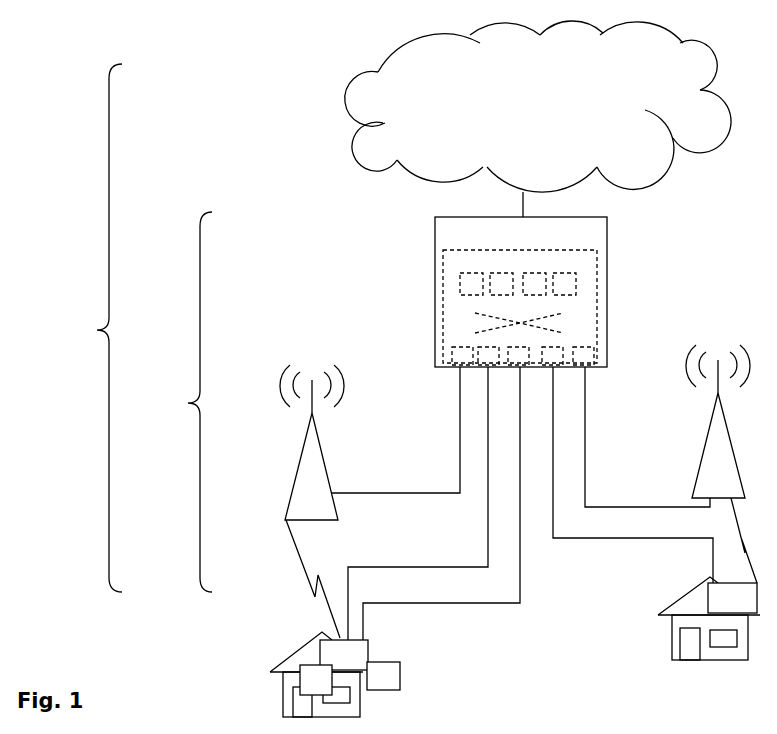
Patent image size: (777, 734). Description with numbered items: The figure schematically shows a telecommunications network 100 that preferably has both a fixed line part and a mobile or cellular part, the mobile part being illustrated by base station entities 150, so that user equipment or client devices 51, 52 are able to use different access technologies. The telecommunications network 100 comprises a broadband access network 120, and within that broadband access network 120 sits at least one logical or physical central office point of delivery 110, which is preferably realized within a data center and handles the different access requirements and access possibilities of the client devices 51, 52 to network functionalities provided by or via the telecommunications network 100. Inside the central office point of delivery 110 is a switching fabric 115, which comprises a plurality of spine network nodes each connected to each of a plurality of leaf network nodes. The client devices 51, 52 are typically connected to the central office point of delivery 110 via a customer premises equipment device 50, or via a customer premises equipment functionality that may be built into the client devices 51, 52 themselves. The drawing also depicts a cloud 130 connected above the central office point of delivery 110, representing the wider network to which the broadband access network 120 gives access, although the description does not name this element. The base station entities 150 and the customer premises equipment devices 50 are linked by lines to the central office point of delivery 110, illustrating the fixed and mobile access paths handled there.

The telecommunications network 100 is at (94, 328).
The broadband access network 120 is at (175, 402).
The wide area network / cloud 130 is at (538, 119).
The central office point of delivery 110 is at (522, 428).
The switching fabric 115 is at (520, 307).
The base station entity 150 is at (518, 491).
The customer premises equipment device 50 is at (515, 647).
The client device 51 is at (383, 676).
The client device 52 is at (316, 680).